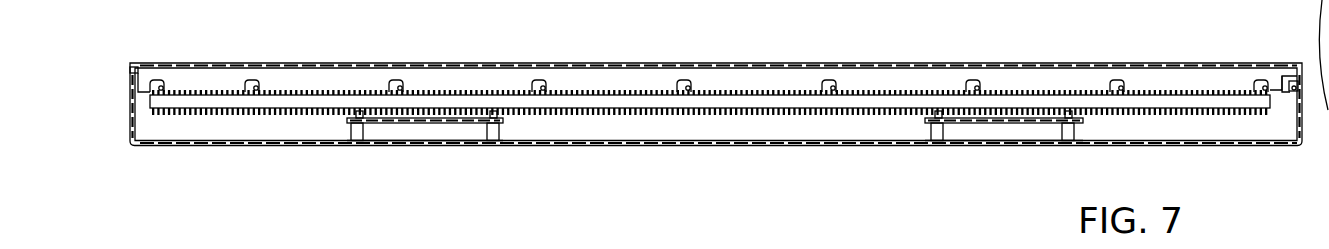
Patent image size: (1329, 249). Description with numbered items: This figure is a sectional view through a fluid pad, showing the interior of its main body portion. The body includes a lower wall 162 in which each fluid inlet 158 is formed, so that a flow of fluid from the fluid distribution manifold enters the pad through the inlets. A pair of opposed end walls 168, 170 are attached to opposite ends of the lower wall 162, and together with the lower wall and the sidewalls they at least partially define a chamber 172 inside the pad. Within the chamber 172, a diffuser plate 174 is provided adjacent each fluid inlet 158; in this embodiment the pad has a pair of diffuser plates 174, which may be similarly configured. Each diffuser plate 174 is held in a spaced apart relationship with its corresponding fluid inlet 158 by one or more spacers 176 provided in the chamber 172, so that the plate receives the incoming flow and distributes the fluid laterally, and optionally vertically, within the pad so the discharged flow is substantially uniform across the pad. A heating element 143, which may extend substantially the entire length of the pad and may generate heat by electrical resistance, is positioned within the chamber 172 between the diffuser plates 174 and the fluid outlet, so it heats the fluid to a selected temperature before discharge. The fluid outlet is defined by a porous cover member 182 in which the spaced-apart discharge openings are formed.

The heating element 143 is at (257, 100).
The fluid inlet 158 is at (387, 144).
The lower wall 162 is at (583, 146).
The end wall 168 is at (131, 133).
The end wall 170 is at (1303, 141).
The chamber 172 is at (731, 138).
The diffuser plate 174 is at (420, 123).
The spacer 176 is at (351, 142).
The cover member 182 is at (1300, 73).